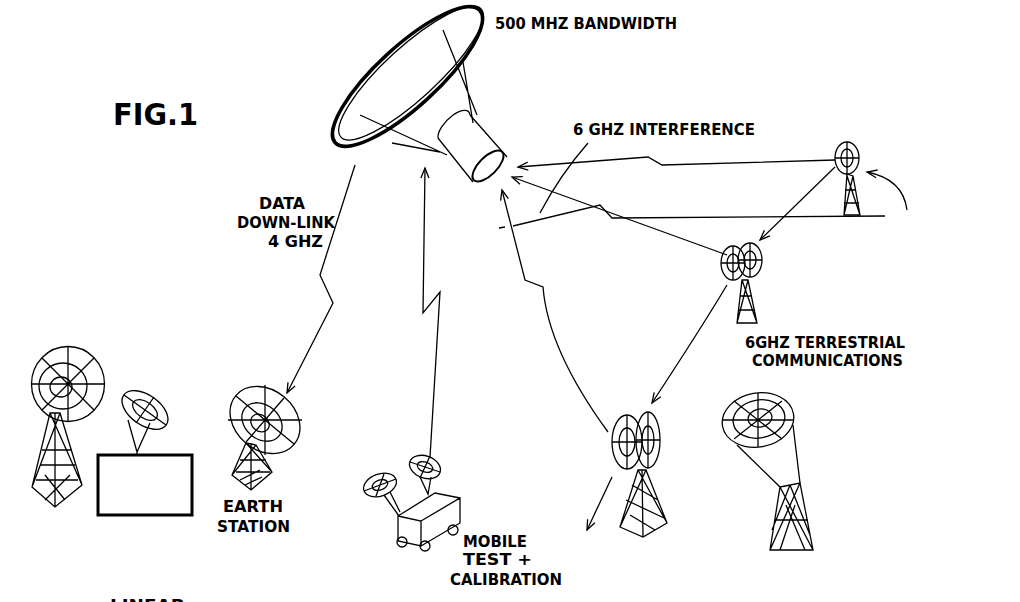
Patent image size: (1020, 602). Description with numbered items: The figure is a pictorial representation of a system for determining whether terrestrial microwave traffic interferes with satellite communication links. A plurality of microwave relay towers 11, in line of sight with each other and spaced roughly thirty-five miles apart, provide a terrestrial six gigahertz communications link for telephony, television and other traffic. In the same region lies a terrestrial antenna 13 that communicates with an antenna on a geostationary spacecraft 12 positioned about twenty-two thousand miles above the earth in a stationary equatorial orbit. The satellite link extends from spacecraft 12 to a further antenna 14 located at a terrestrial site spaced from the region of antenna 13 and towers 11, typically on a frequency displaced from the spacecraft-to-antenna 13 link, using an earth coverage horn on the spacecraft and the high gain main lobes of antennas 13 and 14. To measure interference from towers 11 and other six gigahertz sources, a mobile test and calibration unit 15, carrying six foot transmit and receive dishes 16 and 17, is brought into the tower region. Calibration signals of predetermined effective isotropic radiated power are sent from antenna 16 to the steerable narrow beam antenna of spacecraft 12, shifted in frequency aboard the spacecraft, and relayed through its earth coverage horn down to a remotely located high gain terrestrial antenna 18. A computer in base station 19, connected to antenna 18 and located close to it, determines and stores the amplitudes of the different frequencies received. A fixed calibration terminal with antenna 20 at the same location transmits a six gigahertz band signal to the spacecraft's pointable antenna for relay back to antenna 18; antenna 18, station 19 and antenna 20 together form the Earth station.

The microwave relay towers 11 is at (858, 150).
The geostationary spacecraft 12 is at (380, 52).
The terrestrial antenna 13 is at (795, 437).
The antenna 14 is at (65, 347).
The mobile test and calibration unit 15 is at (455, 505).
The transmit dish 16 is at (412, 458).
The receive dish 17 is at (365, 470).
The terrestrial antenna 18 is at (245, 385).
The base station 19 is at (157, 510).
The antenna 20 is at (140, 400).